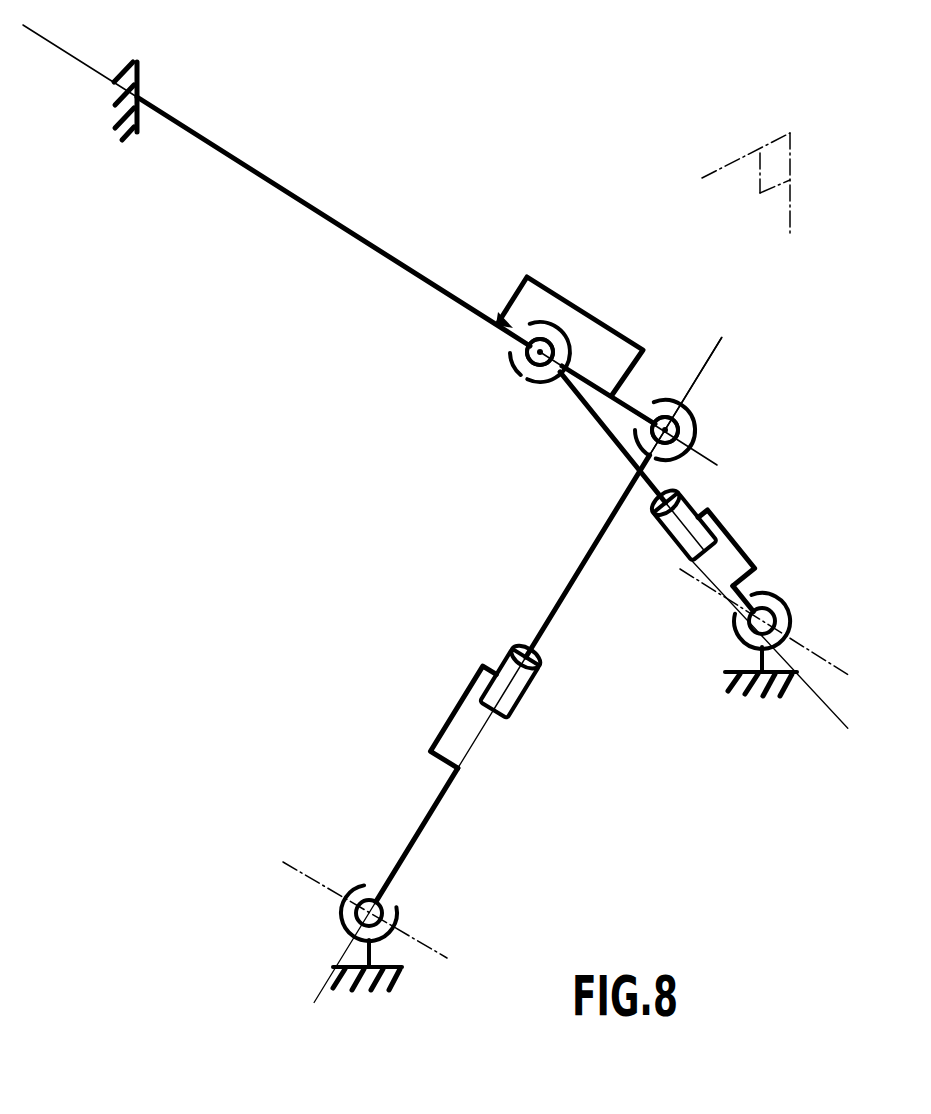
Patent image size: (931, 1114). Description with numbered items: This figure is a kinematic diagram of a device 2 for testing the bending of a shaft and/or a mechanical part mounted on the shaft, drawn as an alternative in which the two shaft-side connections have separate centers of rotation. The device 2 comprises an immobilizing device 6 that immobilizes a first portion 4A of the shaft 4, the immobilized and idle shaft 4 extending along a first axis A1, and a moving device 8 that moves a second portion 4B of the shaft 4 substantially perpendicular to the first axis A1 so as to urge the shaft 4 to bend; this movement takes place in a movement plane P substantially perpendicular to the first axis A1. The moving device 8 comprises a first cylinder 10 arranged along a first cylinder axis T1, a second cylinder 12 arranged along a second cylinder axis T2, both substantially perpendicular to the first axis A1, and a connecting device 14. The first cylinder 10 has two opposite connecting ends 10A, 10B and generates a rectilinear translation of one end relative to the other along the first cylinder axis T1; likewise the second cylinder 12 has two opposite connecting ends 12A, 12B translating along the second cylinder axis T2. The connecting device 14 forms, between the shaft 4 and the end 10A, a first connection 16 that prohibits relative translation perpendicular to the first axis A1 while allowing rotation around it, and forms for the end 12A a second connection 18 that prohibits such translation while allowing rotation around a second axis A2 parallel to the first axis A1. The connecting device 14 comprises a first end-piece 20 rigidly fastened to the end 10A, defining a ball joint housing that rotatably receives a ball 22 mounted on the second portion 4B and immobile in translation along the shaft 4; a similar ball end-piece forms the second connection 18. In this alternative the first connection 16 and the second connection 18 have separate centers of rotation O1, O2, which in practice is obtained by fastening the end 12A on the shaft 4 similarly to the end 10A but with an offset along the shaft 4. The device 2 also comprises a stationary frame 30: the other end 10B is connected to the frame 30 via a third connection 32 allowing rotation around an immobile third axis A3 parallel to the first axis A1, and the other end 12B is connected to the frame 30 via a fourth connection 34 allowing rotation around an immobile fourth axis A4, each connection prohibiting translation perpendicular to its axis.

The device 2 is at (547, 200).
The shaft 4 is at (334, 212).
The first portion of the shaft 4A is at (140, 97).
The second portion of the shaft 4B is at (506, 318).
The immobilizing device 6 is at (142, 130).
The moving device 8 is at (343, 523).
The first cylinder 10 is at (733, 513).
The connecting end of the first cylinder 10A is at (578, 396).
The connecting end of the first cylinder 10B is at (752, 592).
The second cylinder 12 is at (432, 697).
The connecting end of the second cylinder 12A is at (641, 462).
The connecting end of the second cylinder 12B is at (384, 896).
The connecting device 14 is at (643, 300).
The first connection 16 is at (546, 321).
The second connection 18 is at (678, 392).
The first end-piece 20 is at (524, 378).
The ball 22 is at (528, 358).
The stationary frame 30 is at (740, 690).
The third connection 32 is at (734, 632).
The fourth connection 34 is at (333, 925).
The center of rotation of the first connection O1 is at (527, 348).
The center of rotation of the second connection O2 is at (680, 425).
The first axis A1 is at (700, 458).
The second axis A2 is at (686, 397).
The third axis A3 is at (842, 667).
The fourth axis A4 is at (442, 950).
The first cylinder axis T1 is at (832, 710).
The second cylinder axis T2 is at (336, 968).
The movement plane P is at (746, 185).